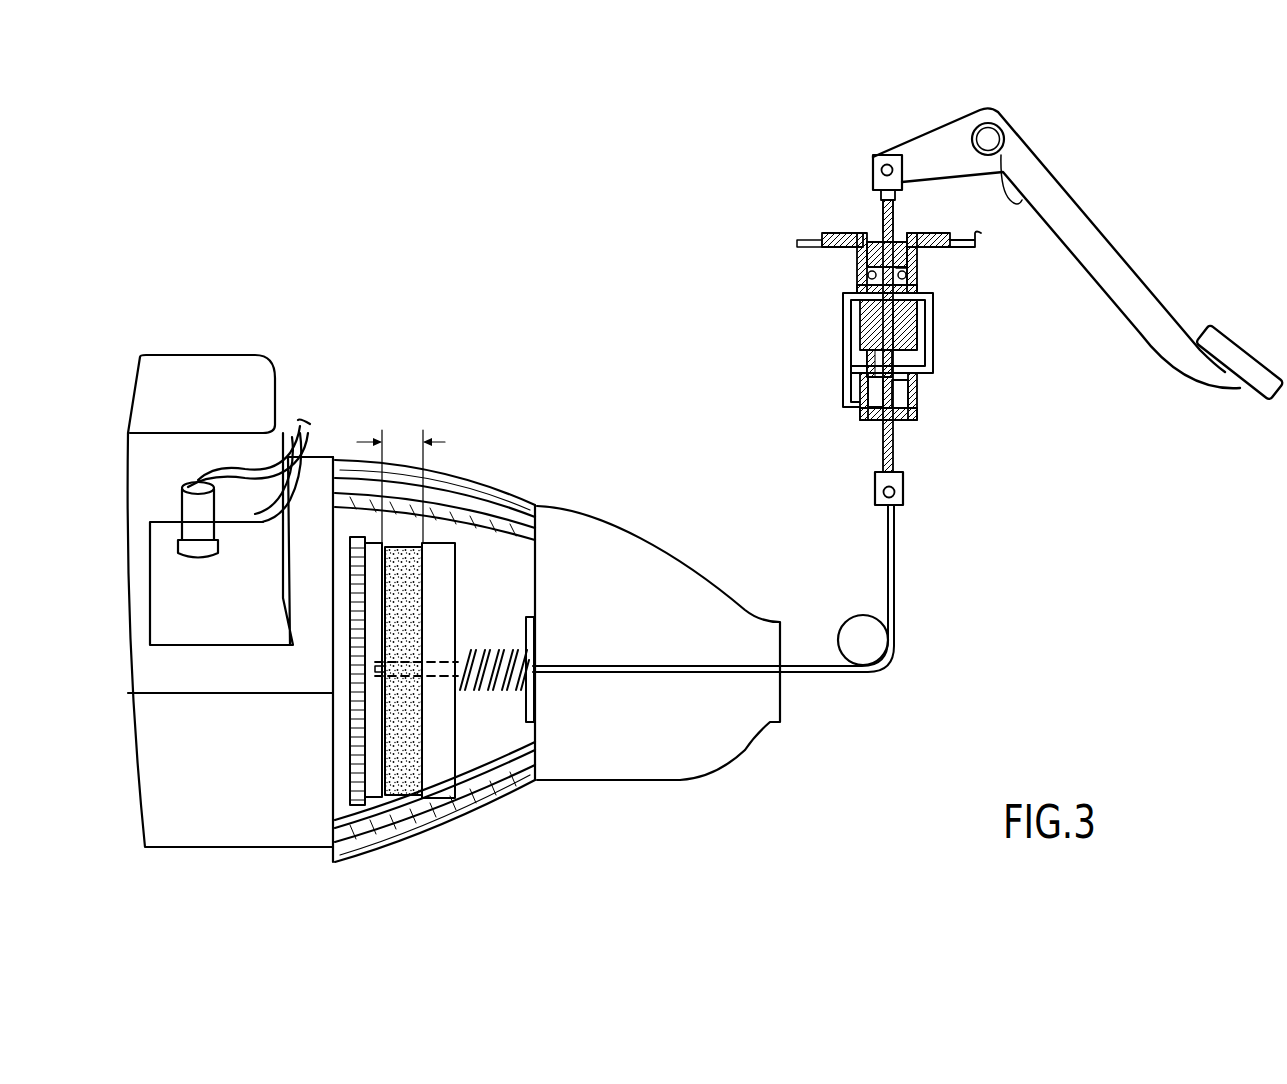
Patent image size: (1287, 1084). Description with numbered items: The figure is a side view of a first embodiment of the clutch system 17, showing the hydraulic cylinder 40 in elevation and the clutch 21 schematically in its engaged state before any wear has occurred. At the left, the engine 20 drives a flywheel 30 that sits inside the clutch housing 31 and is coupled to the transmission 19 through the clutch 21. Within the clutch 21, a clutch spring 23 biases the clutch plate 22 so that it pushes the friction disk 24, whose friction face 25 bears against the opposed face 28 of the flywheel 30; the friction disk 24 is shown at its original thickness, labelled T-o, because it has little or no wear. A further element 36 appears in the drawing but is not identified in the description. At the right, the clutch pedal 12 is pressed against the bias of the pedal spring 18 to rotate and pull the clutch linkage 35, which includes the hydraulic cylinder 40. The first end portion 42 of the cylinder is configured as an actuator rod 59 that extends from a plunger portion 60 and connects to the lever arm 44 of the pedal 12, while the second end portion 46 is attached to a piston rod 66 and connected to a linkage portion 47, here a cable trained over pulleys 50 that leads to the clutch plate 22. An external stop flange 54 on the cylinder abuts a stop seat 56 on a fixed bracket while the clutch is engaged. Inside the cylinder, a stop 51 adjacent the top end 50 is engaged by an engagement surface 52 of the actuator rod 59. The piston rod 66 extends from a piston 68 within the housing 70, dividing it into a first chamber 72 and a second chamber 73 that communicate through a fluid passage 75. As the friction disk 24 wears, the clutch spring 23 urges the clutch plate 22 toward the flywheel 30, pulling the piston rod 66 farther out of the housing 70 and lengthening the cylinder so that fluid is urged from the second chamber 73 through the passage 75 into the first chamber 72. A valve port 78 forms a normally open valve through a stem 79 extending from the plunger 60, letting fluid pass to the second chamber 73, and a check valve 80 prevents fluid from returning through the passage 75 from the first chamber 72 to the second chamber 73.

The clutch pedal 12 is at (1223, 333).
The clutch system 17 is at (783, 520).
The pedal spring 18 is at (1005, 170).
The transmission 19 is at (647, 533).
The engine 20 is at (221, 392).
The clutch 21 is at (474, 743).
The clutch plate 22 is at (443, 548).
The clutch spring 23 is at (497, 652).
The friction disk 24 is at (406, 796).
The friction face 25 is at (387, 767).
The opposed face 28 is at (390, 745).
The flywheel 30 is at (358, 537).
The clutch housing 31 is at (503, 487).
The clutch linkage 35 is at (884, 549).
The shaft 36 is at (392, 648).
The hydraulic cylinder 40 is at (858, 250).
The first end portion 42 is at (873, 175).
The lever arm 44 is at (1103, 235).
The second end portion 46 is at (903, 495).
The linkage portion 47 is at (894, 602).
The pulleys (top end of hydraulic cylinder) 50 is at (857, 632).
The stop 51 is at (912, 268).
The engagement surface 52 is at (867, 266).
The external stop flange 54 is at (923, 232).
The stop seat 56 is at (979, 235).
The actuator rod 59 is at (885, 213).
The plunger portion 60 is at (920, 280).
The piston rod 66 is at (895, 437).
The piston 68 is at (872, 372).
The housing 70 is at (858, 282).
The first chamber 72 is at (877, 358).
The second chamber 73 is at (908, 395).
The fluid passage 75 is at (845, 321).
The valve port 78 is at (903, 305).
The stem 79 is at (891, 314).
The check valve 80 is at (860, 404).